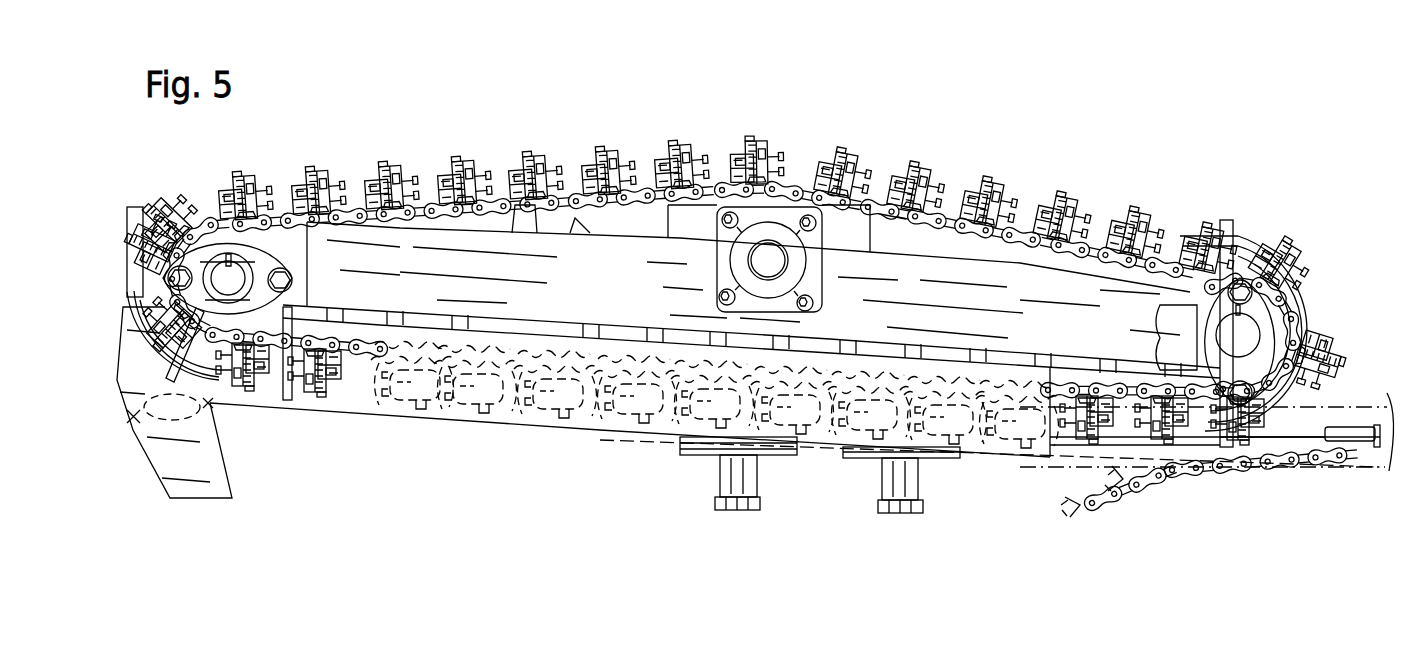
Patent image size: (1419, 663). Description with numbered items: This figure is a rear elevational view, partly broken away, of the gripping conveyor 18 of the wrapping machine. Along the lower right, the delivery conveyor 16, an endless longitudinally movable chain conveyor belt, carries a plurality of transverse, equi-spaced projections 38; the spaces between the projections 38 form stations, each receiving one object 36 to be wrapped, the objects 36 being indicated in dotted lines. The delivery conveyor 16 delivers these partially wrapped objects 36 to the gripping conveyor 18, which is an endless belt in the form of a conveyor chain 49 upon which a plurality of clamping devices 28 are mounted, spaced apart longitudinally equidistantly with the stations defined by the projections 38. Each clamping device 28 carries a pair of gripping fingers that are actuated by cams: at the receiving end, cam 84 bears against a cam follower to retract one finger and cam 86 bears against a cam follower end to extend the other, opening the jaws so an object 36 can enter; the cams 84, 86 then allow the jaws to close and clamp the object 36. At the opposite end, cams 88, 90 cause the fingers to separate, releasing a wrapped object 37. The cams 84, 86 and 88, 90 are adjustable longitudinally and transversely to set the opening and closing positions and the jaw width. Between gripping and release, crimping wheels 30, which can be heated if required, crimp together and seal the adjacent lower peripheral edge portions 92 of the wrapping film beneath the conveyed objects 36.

The clamping devices 28 is at (693, 148).
The gripping conveyor 18 is at (876, 200).
The conveyor chain 49 is at (890, 218).
The cam 84 is at (1330, 290).
The cam 86 is at (1315, 327).
The objects to be wrapped 36 is at (1308, 423).
The delivery conveyor 16 is at (1140, 485).
The projections 38 is at (1097, 485).
The crimping wheels 30 is at (706, 456).
The lower peripheral edge portions 92 is at (660, 442).
The wrapped object 37 is at (133, 423).
The cam 88 is at (140, 325).
The cam 90 is at (143, 288).